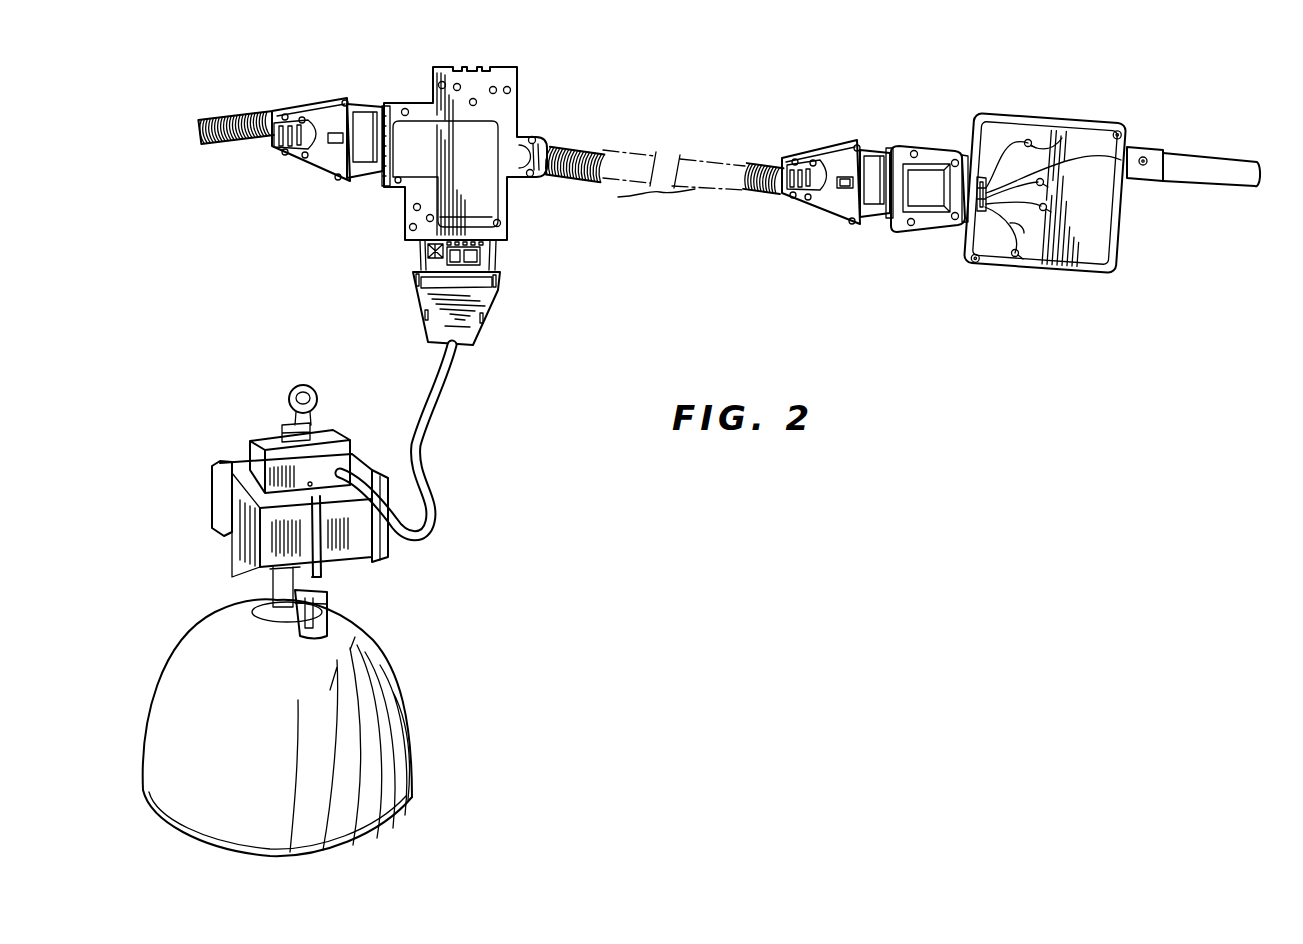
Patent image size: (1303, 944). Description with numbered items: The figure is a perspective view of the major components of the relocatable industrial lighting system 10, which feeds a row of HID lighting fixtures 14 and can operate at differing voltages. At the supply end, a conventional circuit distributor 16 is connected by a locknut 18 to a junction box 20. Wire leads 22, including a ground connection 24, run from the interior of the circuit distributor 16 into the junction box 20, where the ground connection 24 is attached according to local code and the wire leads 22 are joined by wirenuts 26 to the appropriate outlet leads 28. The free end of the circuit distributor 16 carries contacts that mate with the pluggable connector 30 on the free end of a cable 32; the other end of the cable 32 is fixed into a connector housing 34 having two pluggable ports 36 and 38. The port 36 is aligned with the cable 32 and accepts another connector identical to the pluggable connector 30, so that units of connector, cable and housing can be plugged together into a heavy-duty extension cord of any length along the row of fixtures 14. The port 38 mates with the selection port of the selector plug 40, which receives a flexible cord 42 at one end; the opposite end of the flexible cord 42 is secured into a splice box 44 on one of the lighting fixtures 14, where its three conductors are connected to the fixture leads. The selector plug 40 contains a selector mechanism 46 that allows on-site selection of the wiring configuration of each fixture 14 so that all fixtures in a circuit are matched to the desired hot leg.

The industrial lighting system 10 is at (612, 69).
The HID lighting fixture 14 is at (377, 657).
The circuit distributor 16 is at (928, 146).
The locknut 18 is at (987, 173).
The junction box 20 is at (1123, 240).
The wire leads 22 is at (1029, 142).
The ground connection 24 is at (1024, 233).
The wirenuts 26 is at (1043, 178).
The outlet leads 28 is at (1120, 130).
The pluggable connector 30 is at (838, 142).
The cable 32 is at (764, 163).
The connector housing 34 is at (507, 112).
The pluggable port 36 is at (383, 104).
The pluggable port 38 is at (500, 251).
The selector plug 40 is at (487, 307).
The flexible cord 42 is at (437, 407).
The splice box 44 is at (337, 440).
The selector mechanism 46 is at (420, 251).